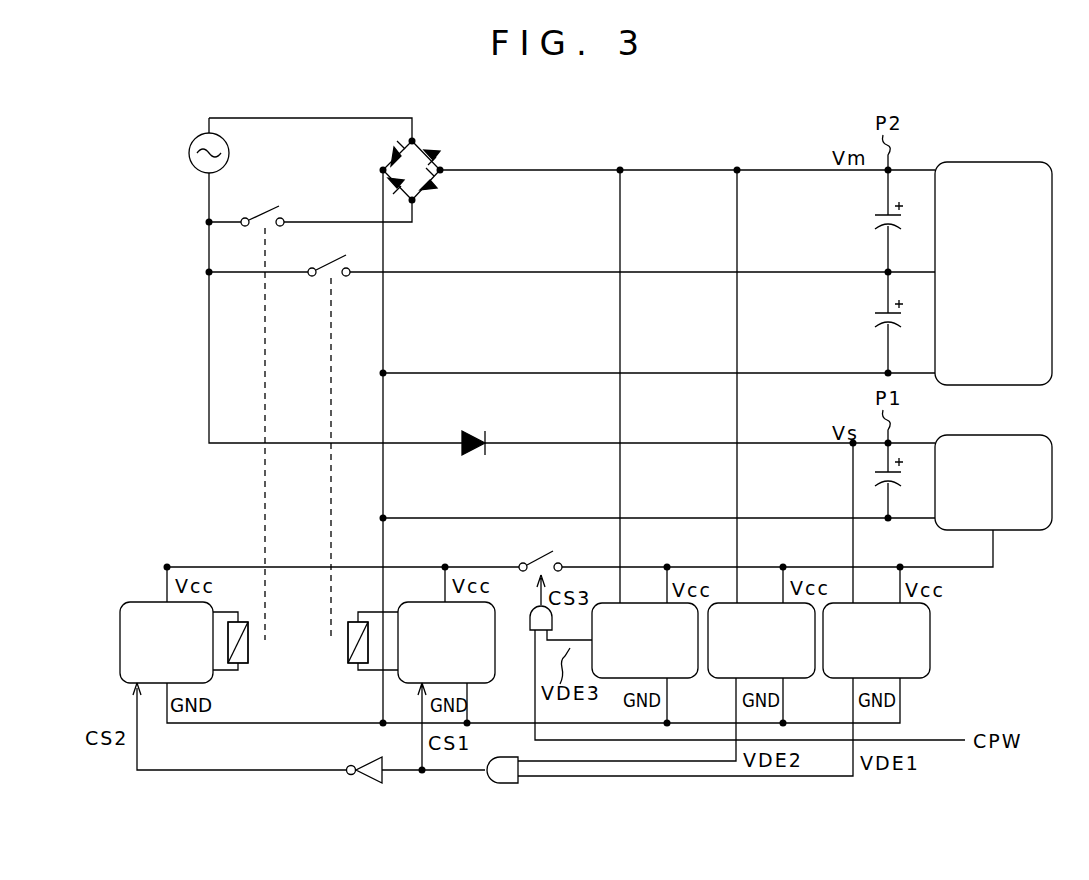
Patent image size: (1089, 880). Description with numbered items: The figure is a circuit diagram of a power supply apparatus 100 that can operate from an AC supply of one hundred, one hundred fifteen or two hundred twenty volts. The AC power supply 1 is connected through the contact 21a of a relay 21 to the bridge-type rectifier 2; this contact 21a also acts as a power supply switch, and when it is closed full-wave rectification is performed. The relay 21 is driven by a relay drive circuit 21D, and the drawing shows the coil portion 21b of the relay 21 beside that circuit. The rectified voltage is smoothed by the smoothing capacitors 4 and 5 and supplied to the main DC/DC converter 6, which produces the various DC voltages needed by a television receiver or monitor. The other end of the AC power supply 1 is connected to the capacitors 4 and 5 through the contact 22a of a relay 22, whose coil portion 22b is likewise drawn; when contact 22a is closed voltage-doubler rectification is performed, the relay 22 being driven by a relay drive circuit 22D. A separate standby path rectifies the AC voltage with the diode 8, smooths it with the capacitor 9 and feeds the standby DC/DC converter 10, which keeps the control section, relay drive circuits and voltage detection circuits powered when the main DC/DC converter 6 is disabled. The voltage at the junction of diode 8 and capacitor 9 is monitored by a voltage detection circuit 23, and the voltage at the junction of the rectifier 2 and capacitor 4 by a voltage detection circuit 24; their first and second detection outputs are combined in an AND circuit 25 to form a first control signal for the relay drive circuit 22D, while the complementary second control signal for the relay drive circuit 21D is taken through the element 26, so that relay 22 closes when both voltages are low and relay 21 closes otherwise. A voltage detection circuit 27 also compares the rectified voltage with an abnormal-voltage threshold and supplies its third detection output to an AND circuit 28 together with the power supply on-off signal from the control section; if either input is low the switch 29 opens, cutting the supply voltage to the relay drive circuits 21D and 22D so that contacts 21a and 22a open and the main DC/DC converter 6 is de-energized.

The AC power supply 1 is at (194, 166).
The bridge-type rectifier 2 is at (437, 143).
The smoothing capacitor 4 is at (903, 230).
The smoothing capacitor 5 is at (903, 328).
The main DC/DC converter 6 is at (983, 160).
The diode 8 is at (478, 430).
The capacitor 9 is at (903, 487).
The standby DC/DC converter 10 is at (983, 435).
The relay 21 is at (287, 670).
The contact of relay 21 21a is at (260, 210).
The relay coil 21b is at (242, 664).
The relay drive circuit 21D is at (148, 602).
The relay 22 is at (342, 670).
The contact of relay 22 22a is at (320, 266).
The relay coil 22b is at (359, 664).
The relay drive circuit 22D is at (478, 684).
The voltage detection circuit 23 is at (906, 679).
The voltage detection circuit 24 is at (791, 679).
The AND circuit 25 is at (497, 786).
The inverter 26 is at (360, 786).
The voltage detection circuit 27 is at (675, 679).
The AND circuit 28 is at (530, 628).
The switch 29 is at (566, 546).
The power supply apparatus 100 is at (700, 123).